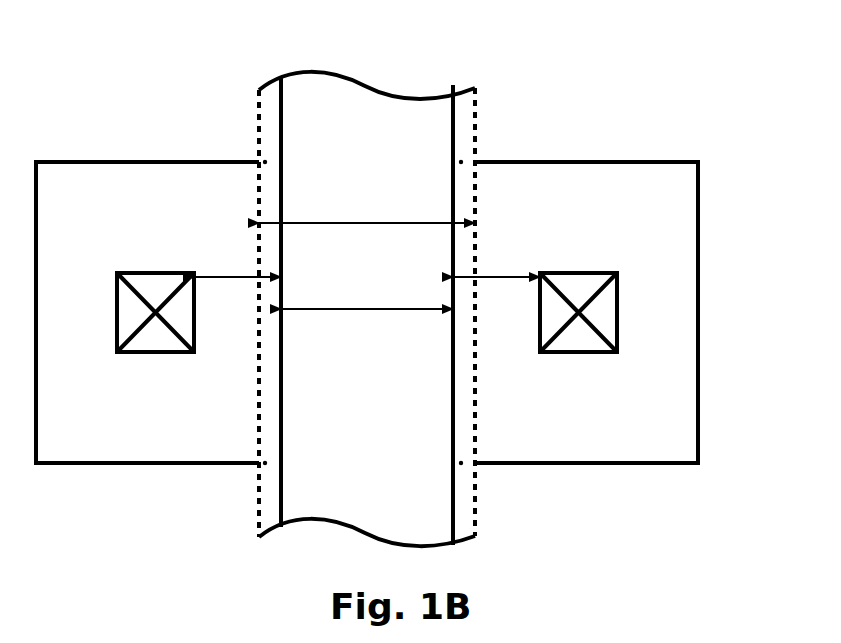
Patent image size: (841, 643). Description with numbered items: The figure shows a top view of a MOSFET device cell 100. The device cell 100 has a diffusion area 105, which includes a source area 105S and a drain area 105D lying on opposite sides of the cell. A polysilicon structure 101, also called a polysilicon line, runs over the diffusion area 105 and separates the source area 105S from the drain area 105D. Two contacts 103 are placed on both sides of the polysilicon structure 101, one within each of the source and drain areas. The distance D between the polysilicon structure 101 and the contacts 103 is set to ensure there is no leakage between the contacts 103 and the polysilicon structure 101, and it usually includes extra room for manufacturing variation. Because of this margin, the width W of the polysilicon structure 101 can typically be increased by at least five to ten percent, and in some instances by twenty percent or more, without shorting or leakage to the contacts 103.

The device cell 100 is at (640, 50).
The polysilicon structure 101 is at (425, 124).
The contacts 103 is at (617, 312).
The diffusion area 105 is at (698, 400).
The drain area 105D is at (184, 455).
The source area 105S is at (688, 450).